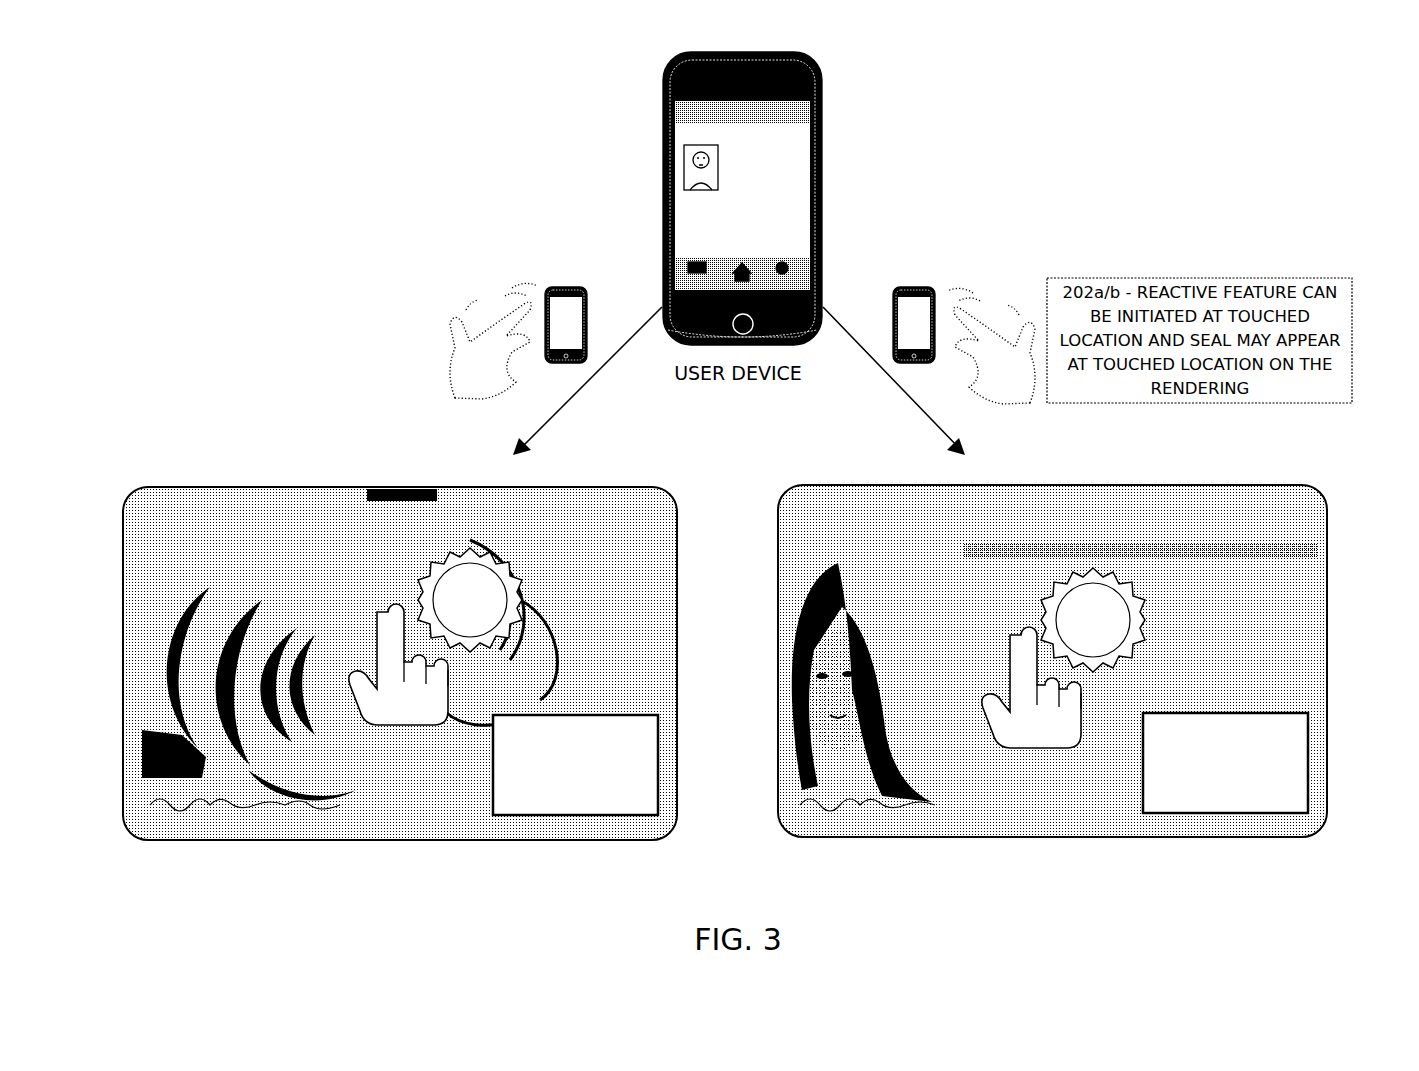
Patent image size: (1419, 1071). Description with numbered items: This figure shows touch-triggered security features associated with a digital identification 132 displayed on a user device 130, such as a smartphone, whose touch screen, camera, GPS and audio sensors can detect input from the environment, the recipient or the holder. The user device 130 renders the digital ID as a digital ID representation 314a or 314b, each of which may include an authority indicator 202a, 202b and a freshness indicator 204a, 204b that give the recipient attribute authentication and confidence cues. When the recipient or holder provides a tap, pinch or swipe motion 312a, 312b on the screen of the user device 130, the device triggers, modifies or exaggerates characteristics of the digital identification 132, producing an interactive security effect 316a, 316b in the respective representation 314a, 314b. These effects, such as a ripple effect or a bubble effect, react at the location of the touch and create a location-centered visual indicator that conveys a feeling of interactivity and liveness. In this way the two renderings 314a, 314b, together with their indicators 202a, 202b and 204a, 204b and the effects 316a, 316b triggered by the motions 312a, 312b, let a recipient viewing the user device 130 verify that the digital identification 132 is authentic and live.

The user device 130 is at (665, 70).
The digital identification 132 is at (792, 172).
The tap, pinch or swipe motion 312a is at (503, 296).
The tap, pinch or swipe motion 312b is at (949, 296).
The digital ID representation 314a is at (430, 639).
The digital ID representation 314b is at (1083, 636).
The interactive security effect 316a is at (335, 578).
The interactive security effect 316b is at (913, 605).
The authority indicator 202a is at (515, 568).
The authority indicator 202b is at (1150, 577).
The freshness indicator 204a is at (658, 715).
The freshness indicator 204b is at (1310, 714).